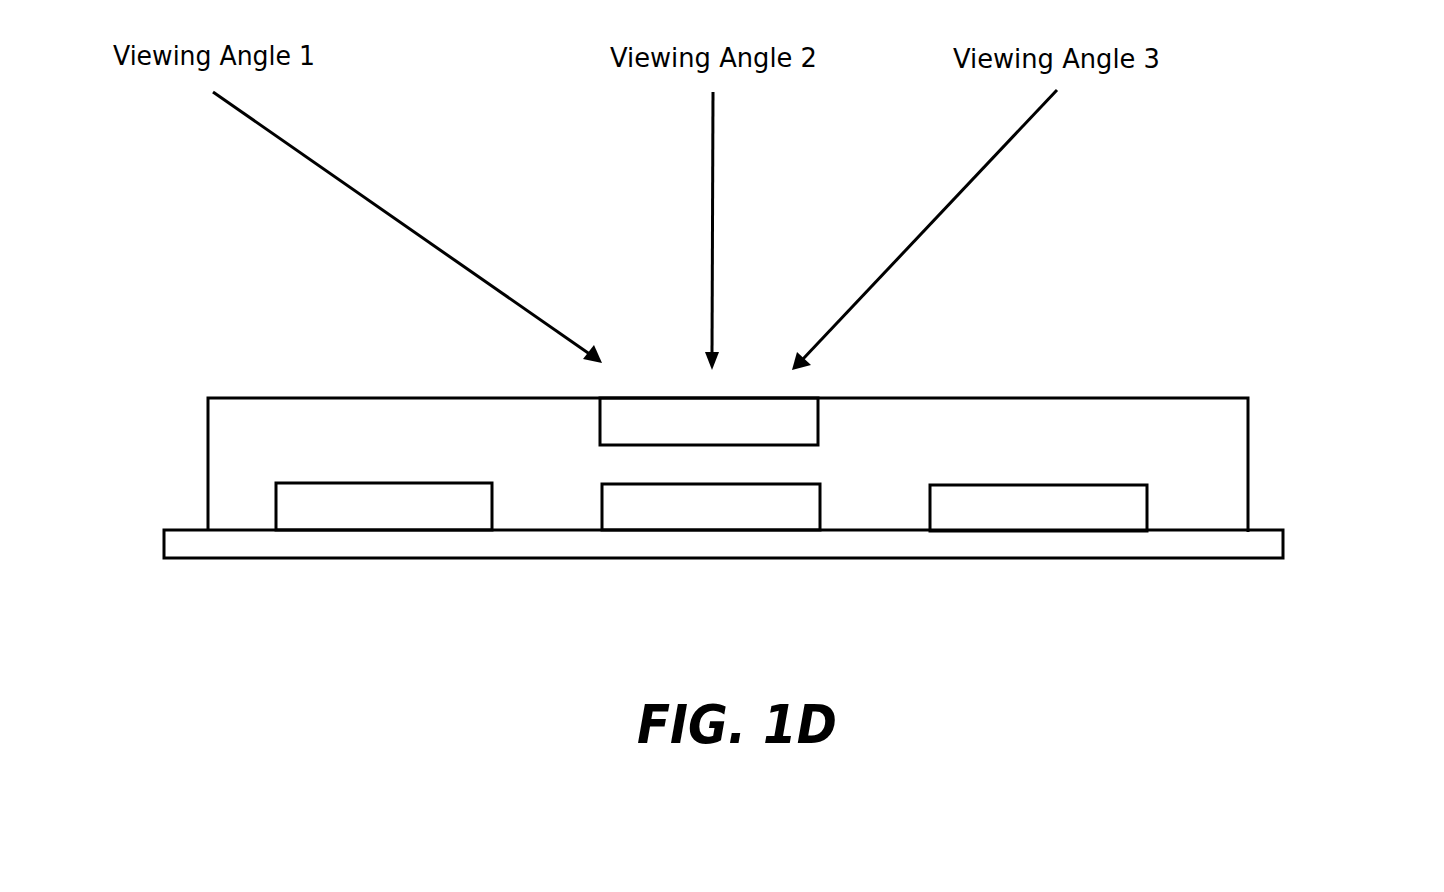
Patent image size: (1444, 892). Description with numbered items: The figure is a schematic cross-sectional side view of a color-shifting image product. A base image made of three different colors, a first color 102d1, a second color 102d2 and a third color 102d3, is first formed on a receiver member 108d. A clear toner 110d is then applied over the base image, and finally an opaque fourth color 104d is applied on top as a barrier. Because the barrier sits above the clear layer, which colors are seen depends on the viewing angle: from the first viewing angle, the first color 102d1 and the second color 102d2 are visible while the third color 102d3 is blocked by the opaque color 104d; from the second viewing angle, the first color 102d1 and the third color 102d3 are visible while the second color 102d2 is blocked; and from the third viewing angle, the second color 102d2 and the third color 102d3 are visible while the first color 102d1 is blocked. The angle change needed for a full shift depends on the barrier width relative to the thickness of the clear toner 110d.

The clear toner 110d is at (208, 462).
The receiver member 108d is at (1283, 548).
The opaque color 104d is at (818, 420).
The Color 1 102d1 is at (276, 507).
The Color 2 102d2 is at (602, 508).
The Color 3 102d3 is at (930, 510).